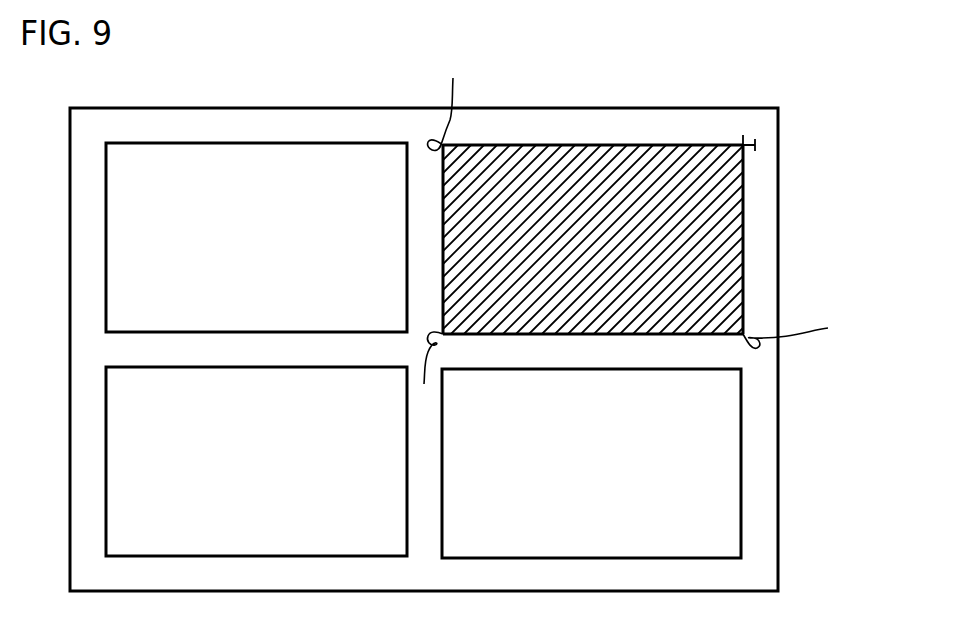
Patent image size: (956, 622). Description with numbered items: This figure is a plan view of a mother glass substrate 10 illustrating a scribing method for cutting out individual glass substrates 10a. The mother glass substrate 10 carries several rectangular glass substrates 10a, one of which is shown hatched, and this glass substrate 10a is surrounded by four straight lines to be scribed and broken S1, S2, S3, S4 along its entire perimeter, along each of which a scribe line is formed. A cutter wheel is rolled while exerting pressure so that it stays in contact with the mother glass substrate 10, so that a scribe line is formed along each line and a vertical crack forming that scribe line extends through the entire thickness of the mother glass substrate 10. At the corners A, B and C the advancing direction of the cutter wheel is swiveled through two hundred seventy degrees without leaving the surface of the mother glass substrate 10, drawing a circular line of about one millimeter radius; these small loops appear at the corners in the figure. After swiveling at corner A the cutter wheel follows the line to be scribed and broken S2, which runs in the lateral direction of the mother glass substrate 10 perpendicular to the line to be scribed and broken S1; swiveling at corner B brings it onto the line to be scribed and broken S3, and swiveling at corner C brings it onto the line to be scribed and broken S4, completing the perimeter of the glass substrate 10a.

The mother glass substrate 10 is at (237, 108).
The glass substrate 10a is at (319, 180).
The line to be scribed and broken S1 is at (591, 145).
The line to be scribed and broken S2 is at (442, 235).
The line to be scribed and broken S3 is at (599, 334).
The line to be scribed and broken S4 is at (743, 223).
The corner A is at (445, 99).
The corner B is at (429, 374).
The corner C is at (795, 330).